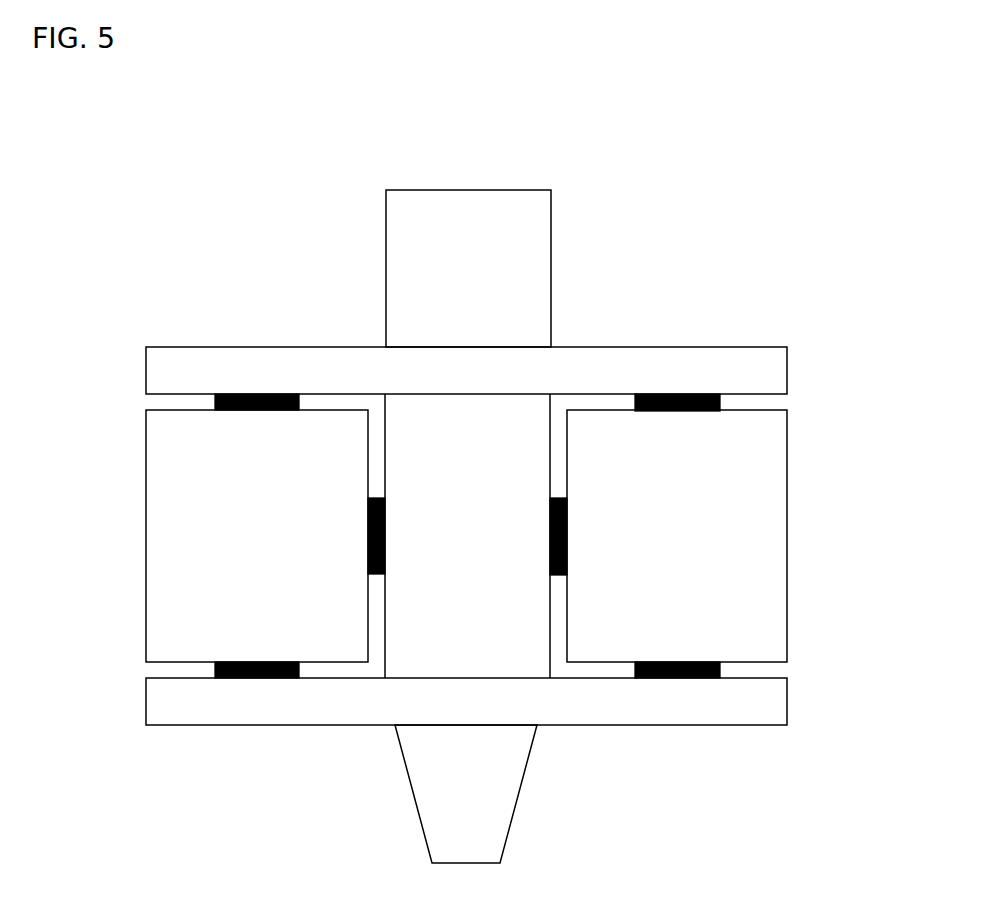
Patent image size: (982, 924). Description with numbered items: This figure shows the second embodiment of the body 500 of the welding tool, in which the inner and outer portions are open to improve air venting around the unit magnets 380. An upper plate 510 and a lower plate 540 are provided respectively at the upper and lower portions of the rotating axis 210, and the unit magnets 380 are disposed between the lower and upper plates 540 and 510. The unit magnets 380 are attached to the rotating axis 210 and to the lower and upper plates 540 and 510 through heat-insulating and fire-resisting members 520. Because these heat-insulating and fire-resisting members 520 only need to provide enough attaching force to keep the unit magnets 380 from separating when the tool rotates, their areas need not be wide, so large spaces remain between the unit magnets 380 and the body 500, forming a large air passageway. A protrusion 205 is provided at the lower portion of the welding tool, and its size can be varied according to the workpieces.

The body 500 is at (801, 285).
The rotating axis 210 is at (507, 203).
The upper plate 510 is at (777, 373).
The lower plate 540 is at (777, 698).
The unit magnets 380 is at (173, 538).
The heat-insulating and fire-resisting members 520 is at (263, 390).
The protrusion 205 is at (497, 830).